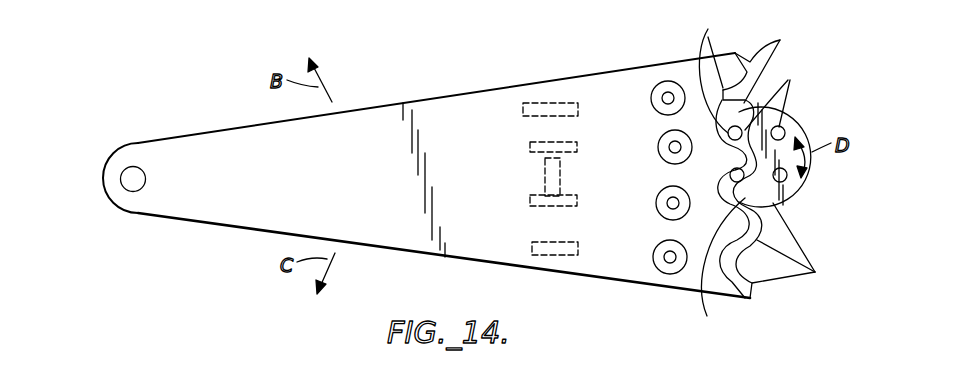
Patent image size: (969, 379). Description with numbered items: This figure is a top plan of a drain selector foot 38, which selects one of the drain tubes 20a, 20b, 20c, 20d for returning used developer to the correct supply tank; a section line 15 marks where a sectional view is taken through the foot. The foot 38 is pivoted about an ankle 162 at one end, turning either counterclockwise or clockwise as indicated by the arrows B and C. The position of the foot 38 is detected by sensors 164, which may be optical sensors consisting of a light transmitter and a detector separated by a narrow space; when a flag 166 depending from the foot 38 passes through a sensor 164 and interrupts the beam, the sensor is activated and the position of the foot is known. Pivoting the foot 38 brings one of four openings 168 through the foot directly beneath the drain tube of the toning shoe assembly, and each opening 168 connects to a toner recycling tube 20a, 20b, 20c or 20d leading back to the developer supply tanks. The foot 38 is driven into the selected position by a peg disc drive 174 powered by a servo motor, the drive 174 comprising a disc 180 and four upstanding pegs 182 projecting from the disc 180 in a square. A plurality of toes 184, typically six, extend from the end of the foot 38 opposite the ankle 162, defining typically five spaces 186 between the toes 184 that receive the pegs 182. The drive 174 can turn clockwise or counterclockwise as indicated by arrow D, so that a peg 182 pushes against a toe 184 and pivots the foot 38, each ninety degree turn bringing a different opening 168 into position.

The section line 15- 15 is at (57, 172).
The drain selector foot 38 is at (360, 180).
The ankle 162 is at (146, 179).
The sensors 164 is at (530, 147).
The flag 166 is at (545, 175).
The openings 168 is at (662, 136).
The drain tube 20a is at (668, 92).
The drain tube 20b is at (659, 150).
The drain tube 20c is at (658, 194).
The drain tube 20d is at (657, 256).
The peg disc drive 174 is at (802, 206).
The disc 180 is at (807, 127).
The pegs 182 is at (790, 80).
The toes 184 is at (788, 166).
The spaces 186 is at (724, 177).